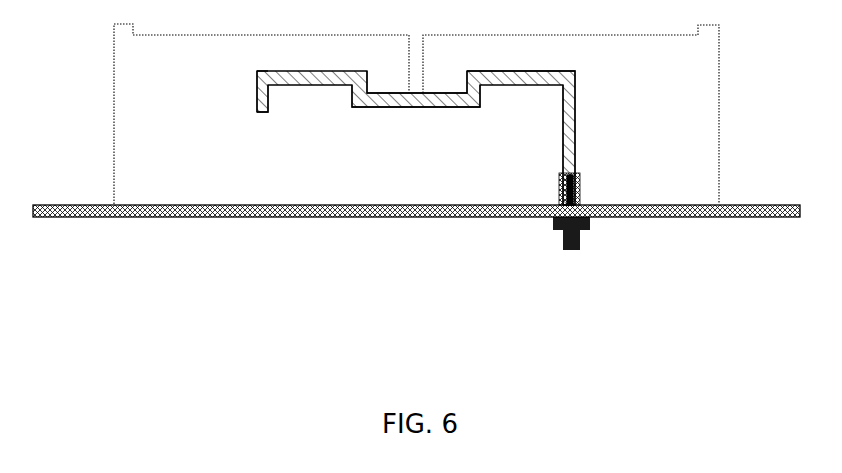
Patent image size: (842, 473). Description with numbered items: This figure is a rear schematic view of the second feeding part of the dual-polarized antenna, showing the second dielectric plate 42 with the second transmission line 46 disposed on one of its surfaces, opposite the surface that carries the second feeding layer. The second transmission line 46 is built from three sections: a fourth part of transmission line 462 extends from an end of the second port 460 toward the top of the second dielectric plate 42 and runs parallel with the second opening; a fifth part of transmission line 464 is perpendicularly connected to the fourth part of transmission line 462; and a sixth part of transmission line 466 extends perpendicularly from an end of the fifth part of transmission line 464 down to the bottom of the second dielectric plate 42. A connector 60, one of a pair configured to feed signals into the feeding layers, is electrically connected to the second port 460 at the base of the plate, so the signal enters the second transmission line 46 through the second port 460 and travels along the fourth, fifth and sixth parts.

The second dielectric plate 42 is at (163, 177).
The second transmission line 46 is at (416, 202).
The second port 460 is at (546, 227).
The fourth part of transmission line 462 is at (568, 142).
The fifth part of transmission line 464 is at (367, 97).
The sixth part of transmission line 466 is at (263, 95).
The connector 60 is at (580, 230).